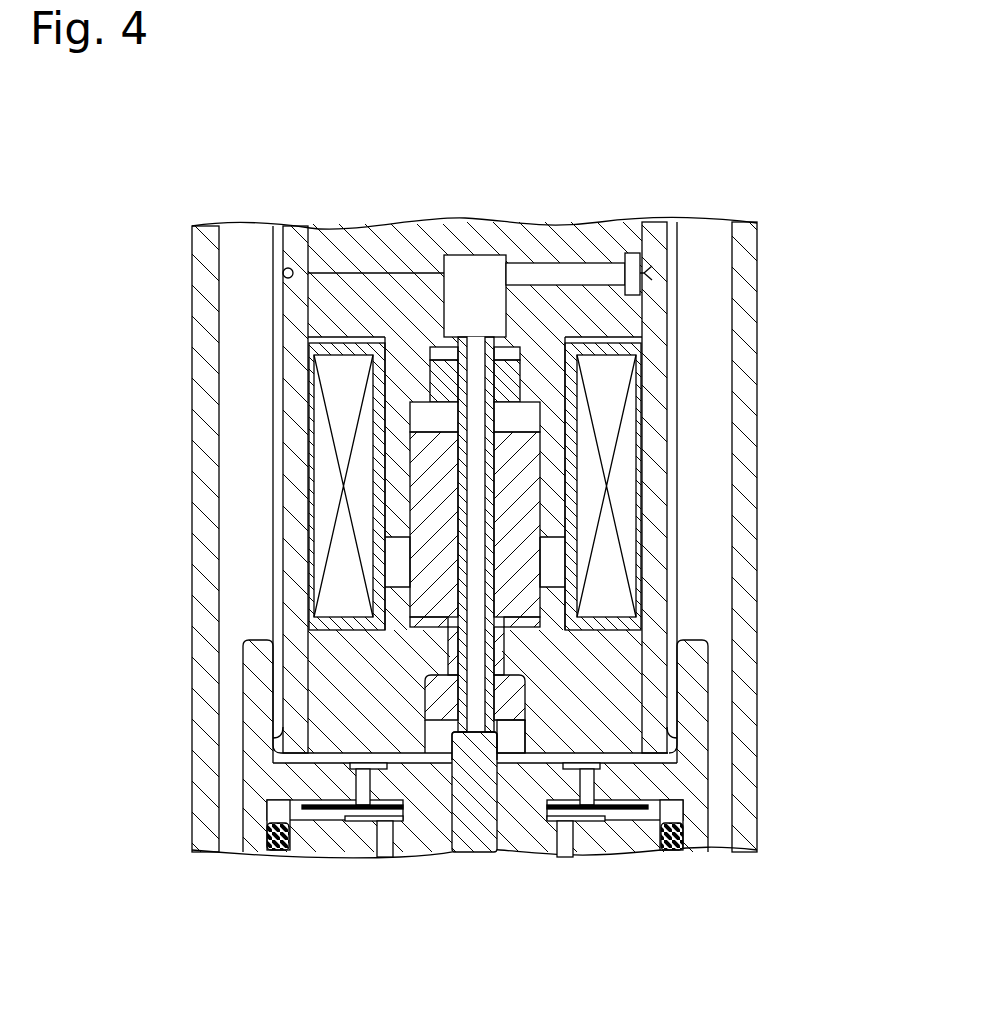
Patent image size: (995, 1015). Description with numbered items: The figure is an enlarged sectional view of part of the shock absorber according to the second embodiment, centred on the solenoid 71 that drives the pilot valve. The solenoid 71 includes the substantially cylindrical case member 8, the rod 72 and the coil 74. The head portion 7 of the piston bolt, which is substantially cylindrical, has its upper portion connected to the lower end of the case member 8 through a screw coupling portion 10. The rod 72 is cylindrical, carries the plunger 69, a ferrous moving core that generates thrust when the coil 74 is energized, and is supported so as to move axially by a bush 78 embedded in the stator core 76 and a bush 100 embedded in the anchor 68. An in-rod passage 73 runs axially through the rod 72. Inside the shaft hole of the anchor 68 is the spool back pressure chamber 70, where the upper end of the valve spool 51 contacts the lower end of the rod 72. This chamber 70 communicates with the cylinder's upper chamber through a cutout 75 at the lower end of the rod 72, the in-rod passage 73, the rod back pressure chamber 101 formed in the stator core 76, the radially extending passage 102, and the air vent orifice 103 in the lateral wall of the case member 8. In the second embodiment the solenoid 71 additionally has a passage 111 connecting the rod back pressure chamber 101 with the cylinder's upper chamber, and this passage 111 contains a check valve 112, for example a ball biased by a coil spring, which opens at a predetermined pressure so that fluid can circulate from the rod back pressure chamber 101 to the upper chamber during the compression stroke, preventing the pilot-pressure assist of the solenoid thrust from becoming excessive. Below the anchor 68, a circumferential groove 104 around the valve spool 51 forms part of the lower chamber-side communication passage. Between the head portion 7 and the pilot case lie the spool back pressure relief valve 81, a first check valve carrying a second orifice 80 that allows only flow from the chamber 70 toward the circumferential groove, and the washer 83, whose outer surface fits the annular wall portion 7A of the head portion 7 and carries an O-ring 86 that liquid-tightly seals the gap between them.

The head portion 7 is at (724, 783).
The annular wall portion 7A is at (690, 742).
The case member 8 is at (262, 324).
The screw coupling portion 10 is at (700, 655).
The valve spool 51 is at (465, 847).
The anchor 68 is at (350, 665).
The plunger 69 is at (513, 477).
The spool back pressure chamber 70 is at (513, 735).
The solenoid 71 is at (300, 457).
The rod 72 is at (405, 432).
The in-rod passage 73 is at (478, 497).
The coil 74 is at (623, 500).
The cutout 75 is at (455, 742).
The stator core 76 is at (425, 250).
The bush 78 is at (432, 380).
The second orifice 80 is at (662, 840).
The spool back pressure relief valve 81 is at (605, 838).
The washer 83 is at (335, 850).
The O-ring 86 is at (700, 838).
The bush 100 is at (430, 702).
The rod back pressure chamber 101 is at (478, 285).
The passage 102 is at (560, 272).
The air vent orifice 103 is at (670, 278).
The circumferential groove 104 is at (362, 786).
The passage 111 is at (347, 262).
The check valve 112 is at (280, 256).